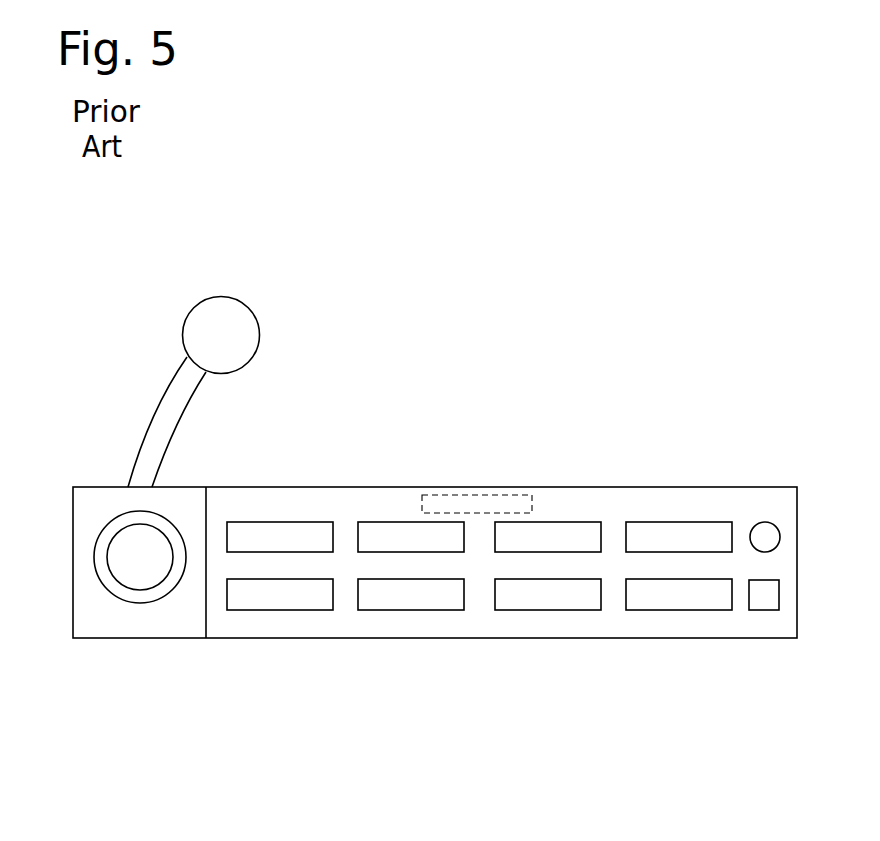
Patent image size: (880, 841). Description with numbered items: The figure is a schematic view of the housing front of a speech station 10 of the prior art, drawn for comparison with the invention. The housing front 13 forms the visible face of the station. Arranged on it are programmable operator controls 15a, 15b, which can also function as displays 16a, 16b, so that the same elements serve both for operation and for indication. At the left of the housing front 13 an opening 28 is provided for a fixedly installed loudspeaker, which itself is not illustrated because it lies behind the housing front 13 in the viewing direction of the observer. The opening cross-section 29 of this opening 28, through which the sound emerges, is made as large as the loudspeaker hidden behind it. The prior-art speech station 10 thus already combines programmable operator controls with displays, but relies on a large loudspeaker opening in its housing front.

The speech station 10 is at (468, 665).
The housing front 13 is at (88, 530).
The programmable operator control 15a is at (283, 533).
The programmable operator control 15b is at (390, 533).
The display 16a is at (558, 533).
The display 16b is at (677, 533).
The opening 28 is at (140, 557).
The opening cross-section 29 is at (112, 595).